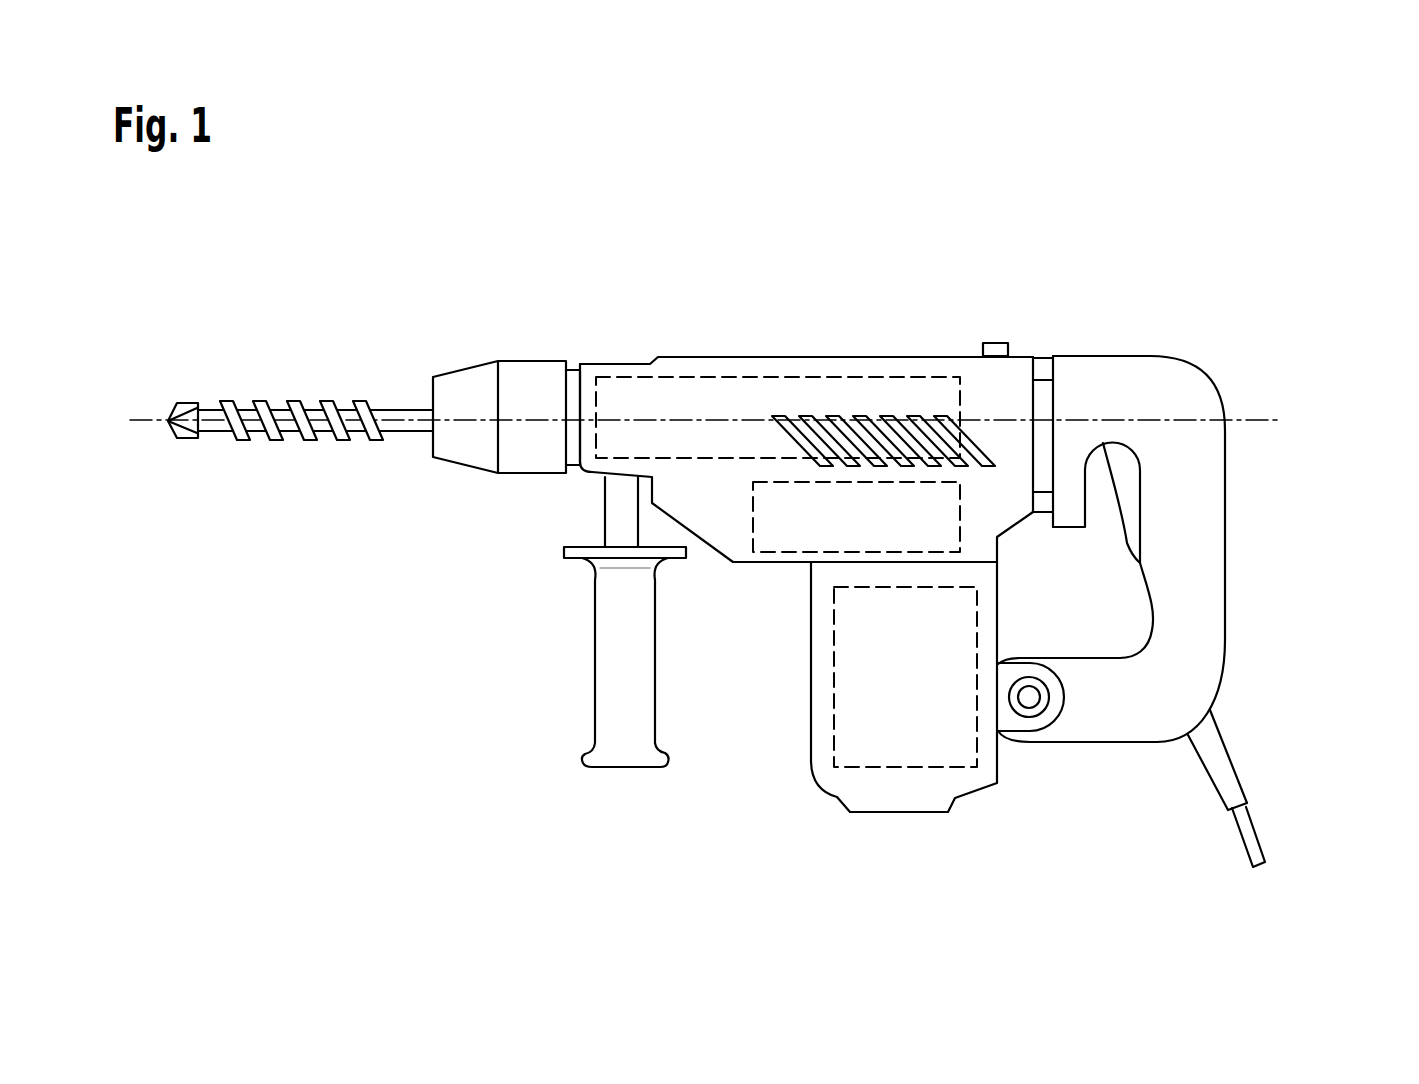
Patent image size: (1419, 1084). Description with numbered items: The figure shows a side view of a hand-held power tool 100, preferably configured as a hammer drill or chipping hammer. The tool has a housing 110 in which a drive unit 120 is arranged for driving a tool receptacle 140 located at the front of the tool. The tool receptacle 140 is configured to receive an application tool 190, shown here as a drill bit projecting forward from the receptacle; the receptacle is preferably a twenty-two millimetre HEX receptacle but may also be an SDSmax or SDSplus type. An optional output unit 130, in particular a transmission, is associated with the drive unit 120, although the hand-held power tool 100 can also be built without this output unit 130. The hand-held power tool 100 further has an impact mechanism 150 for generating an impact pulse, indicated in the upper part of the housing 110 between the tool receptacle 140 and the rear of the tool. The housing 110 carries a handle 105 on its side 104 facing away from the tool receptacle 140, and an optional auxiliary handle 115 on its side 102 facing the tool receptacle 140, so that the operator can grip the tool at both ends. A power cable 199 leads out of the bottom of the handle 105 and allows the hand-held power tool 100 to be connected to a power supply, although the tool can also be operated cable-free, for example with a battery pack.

The hand-held power tool 100 is at (1241, 319).
The side facing the tool receptacle 102 is at (402, 518).
The side facing away from the tool receptacle 104 is at (1282, 517).
The handle 105 is at (1213, 582).
The housing 110 is at (1023, 378).
The auxiliary handle 115 is at (608, 698).
The drive unit 120 is at (905, 767).
The output unit 130 is at (768, 553).
The tool receptacle 140 is at (536, 380).
The impact mechanism 150 is at (786, 377).
The application tool 190 is at (303, 410).
The power cable 199 is at (1228, 778).